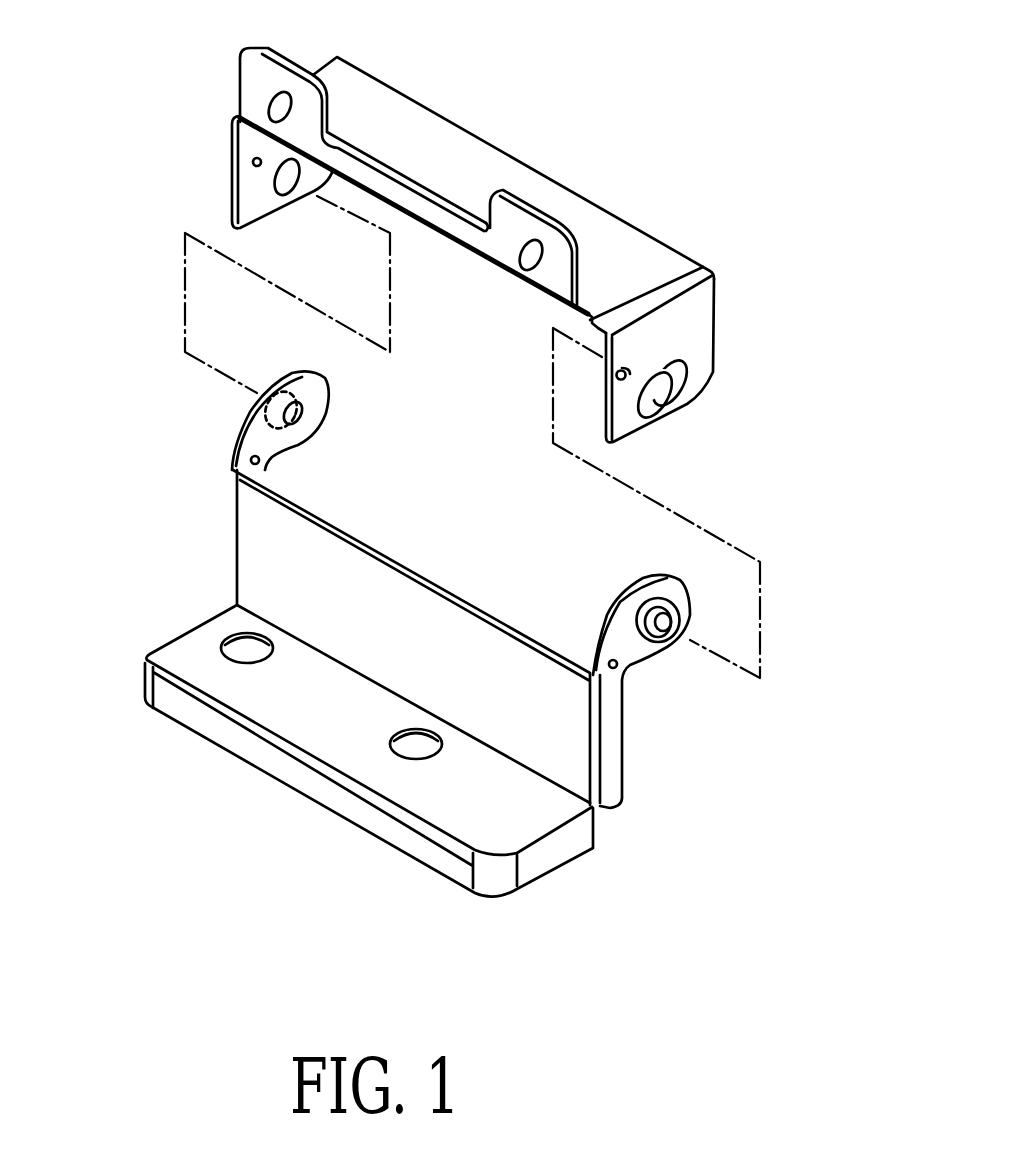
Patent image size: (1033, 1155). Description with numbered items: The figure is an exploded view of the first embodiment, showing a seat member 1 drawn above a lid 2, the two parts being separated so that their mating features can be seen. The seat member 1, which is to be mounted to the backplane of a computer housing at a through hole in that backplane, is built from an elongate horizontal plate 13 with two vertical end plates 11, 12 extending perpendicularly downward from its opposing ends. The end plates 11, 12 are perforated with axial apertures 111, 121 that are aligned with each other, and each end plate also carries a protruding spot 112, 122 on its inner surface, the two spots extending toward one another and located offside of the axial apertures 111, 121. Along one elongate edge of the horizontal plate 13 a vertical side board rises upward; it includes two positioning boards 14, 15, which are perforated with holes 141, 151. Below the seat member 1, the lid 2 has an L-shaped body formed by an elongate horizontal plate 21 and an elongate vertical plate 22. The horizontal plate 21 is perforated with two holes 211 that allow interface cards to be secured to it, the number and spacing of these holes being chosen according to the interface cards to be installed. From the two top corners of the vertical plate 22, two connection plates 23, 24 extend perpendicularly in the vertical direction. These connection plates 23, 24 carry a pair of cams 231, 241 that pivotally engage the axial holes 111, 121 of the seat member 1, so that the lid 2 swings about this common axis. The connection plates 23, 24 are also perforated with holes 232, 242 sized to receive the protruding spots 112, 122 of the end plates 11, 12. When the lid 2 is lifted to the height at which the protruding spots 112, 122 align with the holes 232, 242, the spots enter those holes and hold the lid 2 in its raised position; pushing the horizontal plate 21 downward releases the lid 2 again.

The seat member 1 is at (555, 131).
The vertical end plate 11 is at (690, 337).
The axial aperture 111 is at (660, 387).
The protruding spot 112 is at (607, 380).
The vertical end plate 12 is at (250, 202).
The axial aperture 121 is at (290, 187).
The protruding spot 122 is at (252, 165).
The elongate horizontal plate 13 is at (435, 130).
The positioning board 14 is at (265, 75).
The hole 141 is at (280, 118).
The positioning board 15 is at (530, 220).
The hole 151 is at (527, 262).
The lid 2 is at (271, 825).
The elongate horizontal plate 21 is at (330, 798).
The holes 211 is at (247, 648).
The elongate vertical plate 22 is at (407, 603).
The connection plate 23 is at (640, 650).
The cam 231 is at (680, 637).
The hole 232 is at (617, 670).
The connection plate 24 is at (315, 393).
The cam 241 is at (265, 403).
The hole 242 is at (265, 457).